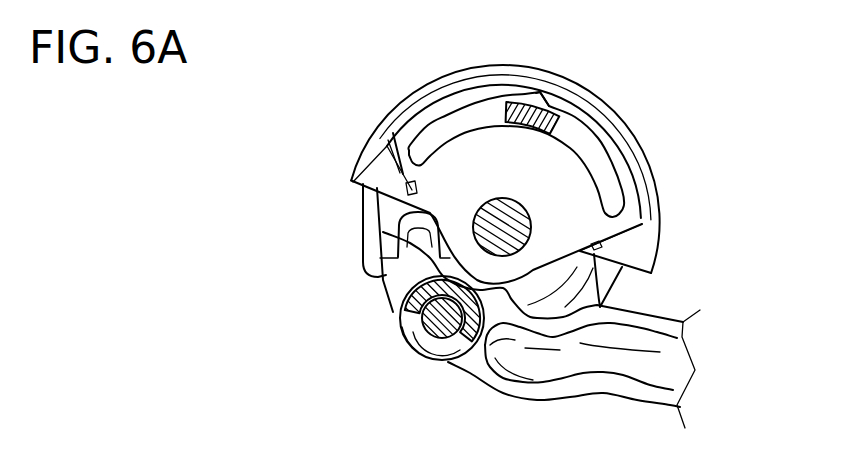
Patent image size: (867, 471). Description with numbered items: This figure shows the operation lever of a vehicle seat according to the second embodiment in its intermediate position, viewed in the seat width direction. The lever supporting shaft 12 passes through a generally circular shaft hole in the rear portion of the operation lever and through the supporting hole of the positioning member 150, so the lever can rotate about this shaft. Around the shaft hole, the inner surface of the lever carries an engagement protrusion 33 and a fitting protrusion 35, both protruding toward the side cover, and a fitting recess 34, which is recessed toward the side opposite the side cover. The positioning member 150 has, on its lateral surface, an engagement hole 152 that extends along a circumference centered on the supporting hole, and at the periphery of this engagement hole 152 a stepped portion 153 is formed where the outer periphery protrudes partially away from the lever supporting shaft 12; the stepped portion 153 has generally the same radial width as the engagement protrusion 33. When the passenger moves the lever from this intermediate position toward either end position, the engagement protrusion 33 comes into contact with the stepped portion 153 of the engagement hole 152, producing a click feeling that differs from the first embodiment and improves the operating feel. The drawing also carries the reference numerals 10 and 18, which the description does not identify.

The adjusting device assembly 10 is at (179, 146).
The lever supporting shaft 12 is at (473, 214).
The pivot pin 18 is at (430, 363).
The engagement protrusion 33 is at (583, 148).
The fitting recess 34 is at (402, 342).
The fitting protrusion 35 is at (402, 302).
The positioning member 150 is at (465, 157).
The engagement hole 152 is at (487, 106).
The stepped portion 153 is at (543, 97).